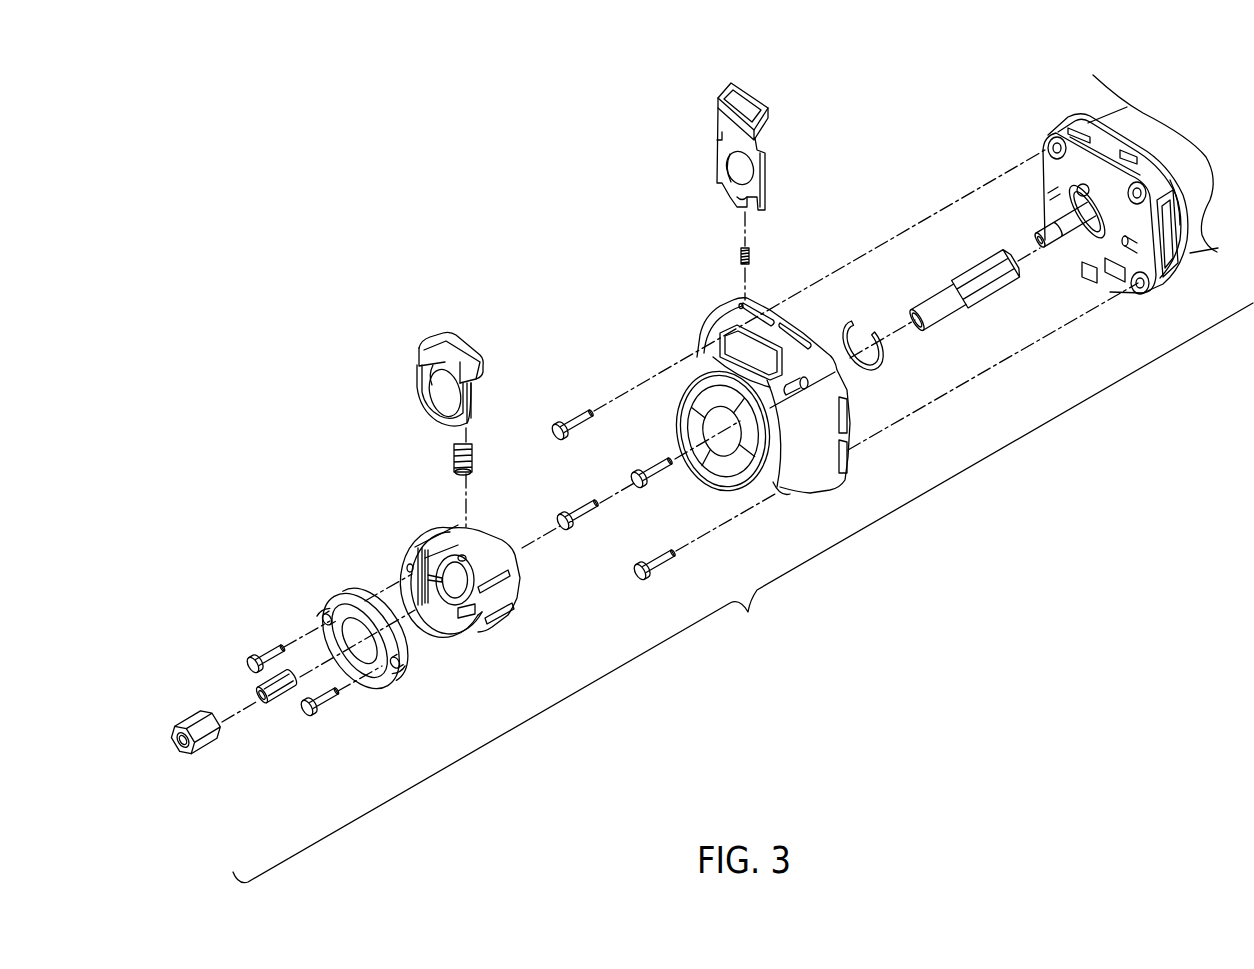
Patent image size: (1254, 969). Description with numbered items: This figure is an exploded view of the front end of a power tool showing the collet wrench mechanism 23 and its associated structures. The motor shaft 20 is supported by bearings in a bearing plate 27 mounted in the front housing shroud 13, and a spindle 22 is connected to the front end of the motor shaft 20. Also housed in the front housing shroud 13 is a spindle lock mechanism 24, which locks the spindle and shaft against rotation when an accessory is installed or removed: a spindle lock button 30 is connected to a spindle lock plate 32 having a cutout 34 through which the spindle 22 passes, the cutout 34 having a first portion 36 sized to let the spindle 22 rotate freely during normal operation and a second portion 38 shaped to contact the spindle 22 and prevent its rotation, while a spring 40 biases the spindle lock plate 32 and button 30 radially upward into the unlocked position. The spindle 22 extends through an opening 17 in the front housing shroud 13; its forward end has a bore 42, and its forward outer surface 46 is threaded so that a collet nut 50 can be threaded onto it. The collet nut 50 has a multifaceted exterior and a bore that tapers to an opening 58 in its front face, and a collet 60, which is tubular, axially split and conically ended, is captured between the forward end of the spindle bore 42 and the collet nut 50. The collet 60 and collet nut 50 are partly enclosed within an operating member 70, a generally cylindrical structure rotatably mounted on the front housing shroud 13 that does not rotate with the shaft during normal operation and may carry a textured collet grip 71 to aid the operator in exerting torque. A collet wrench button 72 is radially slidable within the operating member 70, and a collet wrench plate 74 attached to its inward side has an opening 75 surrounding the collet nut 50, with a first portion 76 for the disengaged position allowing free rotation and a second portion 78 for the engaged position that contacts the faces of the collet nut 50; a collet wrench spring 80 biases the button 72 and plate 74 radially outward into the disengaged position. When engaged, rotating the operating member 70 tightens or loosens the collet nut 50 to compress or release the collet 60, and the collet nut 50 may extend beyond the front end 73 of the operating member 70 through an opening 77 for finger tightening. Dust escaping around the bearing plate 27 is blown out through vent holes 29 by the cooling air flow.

The front housing shroud 13 is at (813, 477).
The opening 17 is at (712, 483).
The motor shaft 20 is at (1068, 257).
The spindle 22 is at (953, 280).
The collet wrench mechanism 23 is at (375, 492).
The spindle lock mechanism 24 is at (713, 96).
The bearing plate 27 is at (1157, 290).
The vent holes 29 is at (852, 462).
The spindle lock button 30 is at (750, 92).
The spindle lock plate 32 is at (767, 157).
The cutout 34 is at (730, 165).
The first portion 36 is at (725, 183).
The second portion 38 is at (727, 152).
The spring 40 is at (752, 253).
The bore 42 is at (928, 323).
The forward outer surface 46 is at (943, 317).
The collet nut 50 is at (208, 757).
The opening 58 is at (170, 733).
The collet 60 is at (284, 706).
The operating member 70 is at (460, 640).
The collet grip 71 is at (503, 607).
The collet wrench button 72 is at (460, 337).
The front end 73 is at (380, 690).
The collet wrench plate 74 is at (472, 408).
The opening 75 is at (433, 394).
The first portion 76 is at (427, 408).
The opening 77 is at (330, 600).
The second portion 78 is at (433, 374).
The collet wrench spring 80 is at (472, 465).